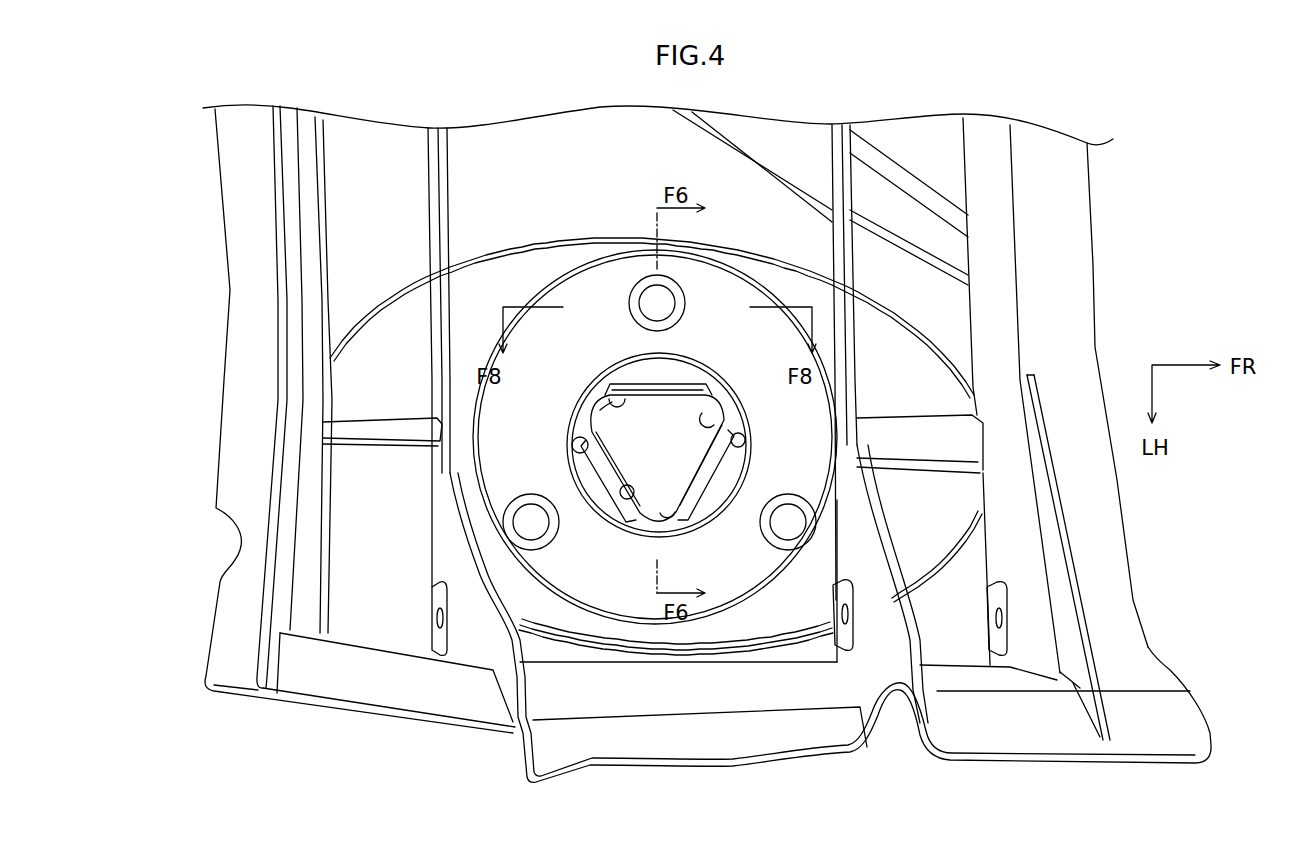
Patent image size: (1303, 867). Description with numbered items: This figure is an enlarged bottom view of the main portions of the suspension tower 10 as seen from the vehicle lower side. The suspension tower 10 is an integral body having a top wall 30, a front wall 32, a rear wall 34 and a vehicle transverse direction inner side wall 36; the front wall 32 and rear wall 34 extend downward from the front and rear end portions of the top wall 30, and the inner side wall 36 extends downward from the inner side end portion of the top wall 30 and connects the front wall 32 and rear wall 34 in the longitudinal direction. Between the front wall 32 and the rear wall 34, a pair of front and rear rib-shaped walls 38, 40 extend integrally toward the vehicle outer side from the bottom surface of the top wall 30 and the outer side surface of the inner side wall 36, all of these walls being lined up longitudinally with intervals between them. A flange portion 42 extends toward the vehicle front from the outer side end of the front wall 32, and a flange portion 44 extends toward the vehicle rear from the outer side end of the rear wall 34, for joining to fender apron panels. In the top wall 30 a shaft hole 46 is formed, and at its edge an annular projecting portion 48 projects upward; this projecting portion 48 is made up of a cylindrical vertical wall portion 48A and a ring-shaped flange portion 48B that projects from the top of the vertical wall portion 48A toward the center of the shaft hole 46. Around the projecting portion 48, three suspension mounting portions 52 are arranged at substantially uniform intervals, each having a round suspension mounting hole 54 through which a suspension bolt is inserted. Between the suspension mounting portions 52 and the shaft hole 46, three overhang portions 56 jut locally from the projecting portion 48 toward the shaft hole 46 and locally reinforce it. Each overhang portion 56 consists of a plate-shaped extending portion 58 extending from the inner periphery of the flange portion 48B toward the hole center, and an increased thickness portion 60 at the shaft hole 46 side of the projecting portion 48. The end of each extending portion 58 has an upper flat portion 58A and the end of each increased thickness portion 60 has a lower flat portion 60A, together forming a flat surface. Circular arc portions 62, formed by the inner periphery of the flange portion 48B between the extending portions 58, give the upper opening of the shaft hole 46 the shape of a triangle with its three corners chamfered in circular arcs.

The suspension tower 10 is at (1118, 206).
The top wall 30 is at (533, 150).
The front wall 32 is at (983, 308).
The rear wall 34 is at (288, 165).
The vehicle transverse direction inner side wall 36 is at (333, 713).
The rib-shaped wall 38 is at (852, 182).
The rib-shaped wall 40 is at (433, 197).
The flange portion 42 is at (1093, 265).
The flange portion 44 is at (230, 298).
The shaft hole 46 is at (640, 474).
The projecting portion 48 is at (707, 407).
The vertical wall portion 48A is at (590, 403).
The flange portion 48B is at (588, 415).
The suspension mounting portion 52 is at (633, 270).
The suspension mounting hole 54 is at (668, 305).
The overhang portion 56 is at (650, 403).
The extending portion 58 is at (747, 453).
The upper flat portion 58A is at (607, 407).
The increased thickness portion 60 is at (653, 508).
The lower flat portion 60A is at (680, 370).
The circular arc portion 62 is at (587, 448).